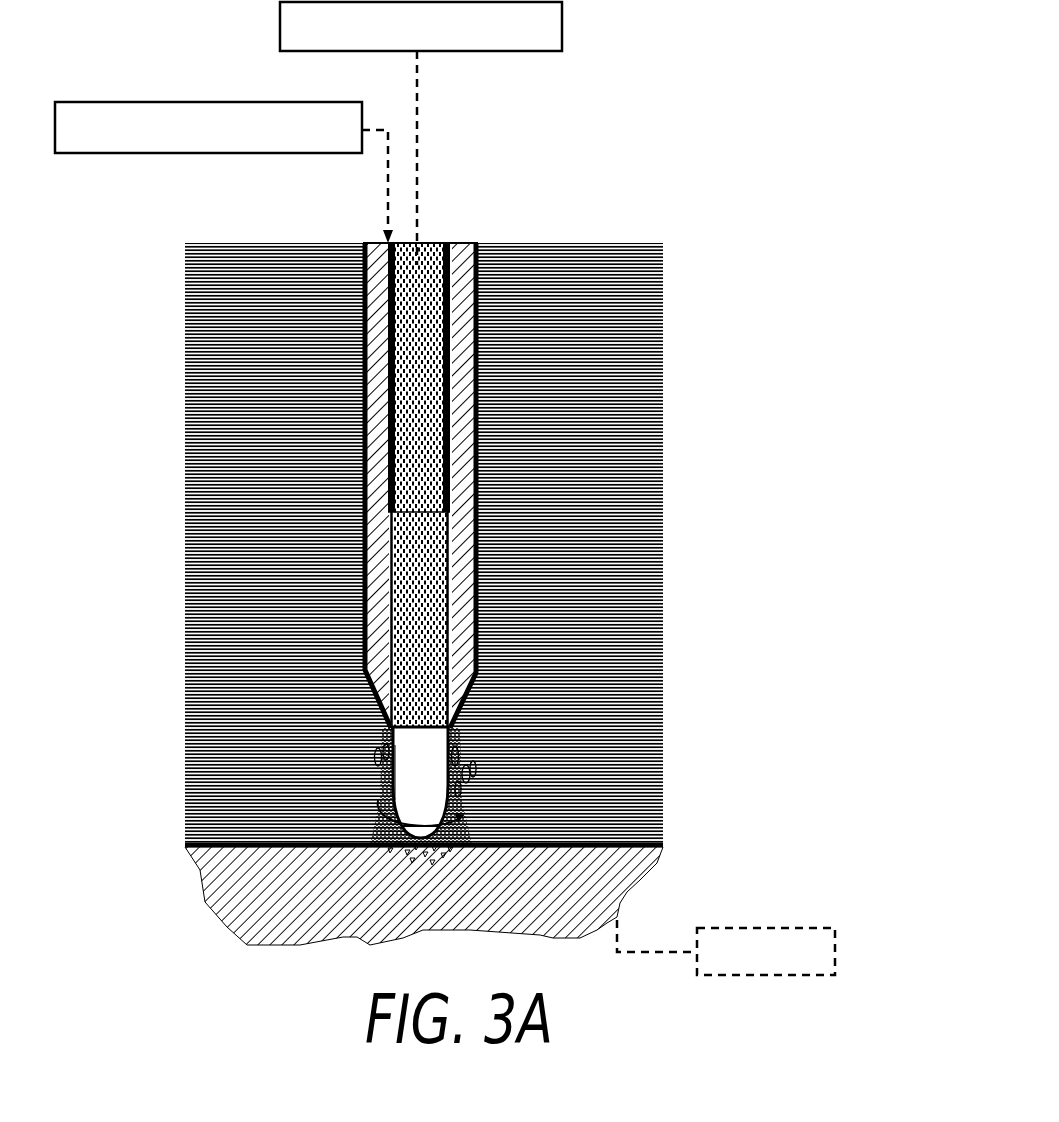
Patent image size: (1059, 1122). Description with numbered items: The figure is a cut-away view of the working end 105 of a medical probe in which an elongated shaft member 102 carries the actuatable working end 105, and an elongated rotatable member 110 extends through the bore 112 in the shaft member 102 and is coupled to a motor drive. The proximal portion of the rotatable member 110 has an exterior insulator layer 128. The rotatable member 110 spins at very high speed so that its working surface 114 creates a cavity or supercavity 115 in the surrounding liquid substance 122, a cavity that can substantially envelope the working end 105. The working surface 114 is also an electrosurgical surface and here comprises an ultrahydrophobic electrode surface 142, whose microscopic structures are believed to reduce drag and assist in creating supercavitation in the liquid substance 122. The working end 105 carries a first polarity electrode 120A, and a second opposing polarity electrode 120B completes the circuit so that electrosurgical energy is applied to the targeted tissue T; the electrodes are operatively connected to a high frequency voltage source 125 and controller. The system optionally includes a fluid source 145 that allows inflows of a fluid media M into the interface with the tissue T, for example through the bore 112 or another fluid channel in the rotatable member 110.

The voltage source 125 is at (421, 133).
The fluid source 145 is at (224, 172).
The working end 105 is at (688, 168).
The shaft member 102 is at (478, 257).
The bore 112 is at (478, 312).
The exterior insulator layer 128 is at (433, 533).
The rotatable member 110 is at (425, 587).
The liquid substance 122 is at (625, 617).
The fluid media M is at (377, 747).
The working surface 114 is at (403, 781).
The ultrahydrophobic electrode surface 142 is at (380, 792).
The first polarity electrode 120A is at (432, 773).
The supercavity 115 is at (453, 807).
The tissue T is at (652, 867).
The second opposing polarity electrode 120B is at (726, 947).